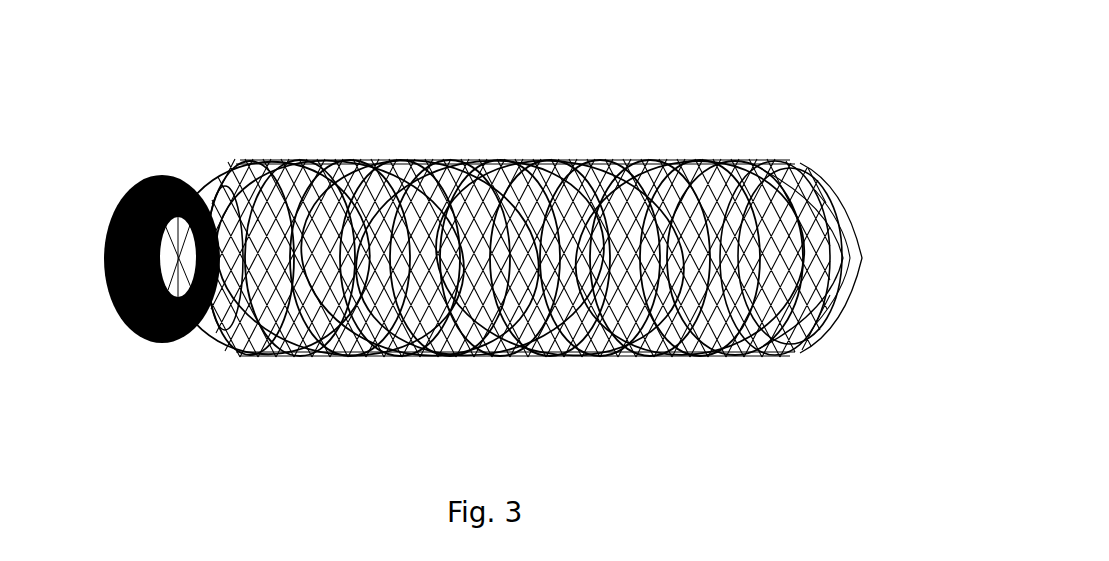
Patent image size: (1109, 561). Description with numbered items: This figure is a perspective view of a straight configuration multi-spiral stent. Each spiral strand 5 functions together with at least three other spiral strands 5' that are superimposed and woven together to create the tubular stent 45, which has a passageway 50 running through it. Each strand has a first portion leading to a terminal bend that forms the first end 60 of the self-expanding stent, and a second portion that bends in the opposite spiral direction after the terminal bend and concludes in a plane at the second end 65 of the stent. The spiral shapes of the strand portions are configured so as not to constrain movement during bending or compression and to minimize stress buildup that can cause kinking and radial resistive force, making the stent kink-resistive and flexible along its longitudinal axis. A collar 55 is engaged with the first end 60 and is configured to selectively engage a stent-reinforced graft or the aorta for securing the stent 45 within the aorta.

The tubular stent 45 is at (781, 70).
The spiral strand 5 is at (350, 228).
The other spiral strands 5' is at (419, 234).
The passageway 50 is at (878, 257).
The collar 55 is at (118, 237).
The first end 60 is at (231, 357).
The second end 65 is at (843, 372).